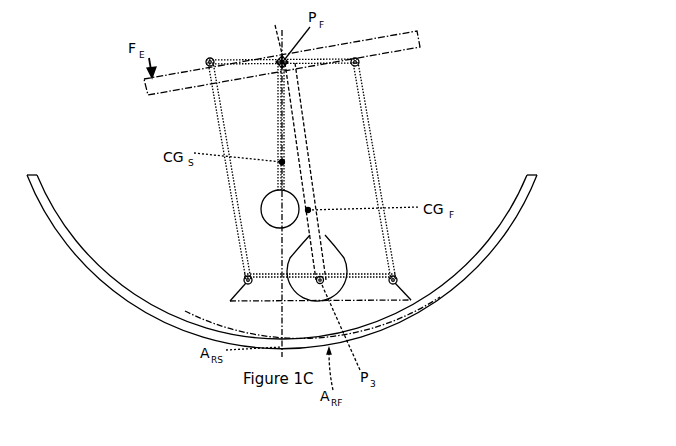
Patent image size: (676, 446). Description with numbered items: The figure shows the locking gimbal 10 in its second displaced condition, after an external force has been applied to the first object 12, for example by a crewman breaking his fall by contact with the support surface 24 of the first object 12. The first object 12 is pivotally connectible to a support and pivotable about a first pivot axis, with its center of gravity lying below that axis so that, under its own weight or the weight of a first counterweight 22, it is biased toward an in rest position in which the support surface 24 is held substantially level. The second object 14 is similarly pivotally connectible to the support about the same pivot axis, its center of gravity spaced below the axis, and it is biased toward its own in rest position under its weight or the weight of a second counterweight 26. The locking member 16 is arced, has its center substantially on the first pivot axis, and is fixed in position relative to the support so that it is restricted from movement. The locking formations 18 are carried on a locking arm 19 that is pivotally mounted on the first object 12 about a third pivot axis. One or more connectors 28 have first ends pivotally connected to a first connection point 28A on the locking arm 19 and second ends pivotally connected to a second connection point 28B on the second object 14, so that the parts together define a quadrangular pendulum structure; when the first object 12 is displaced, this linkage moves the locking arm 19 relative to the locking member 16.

The locking gimbal 10 is at (606, 71).
The first object 12 is at (328, 142).
The second object 14 is at (282, 180).
The locking member 16 is at (478, 258).
The locking formation 18 is at (230, 301).
The locking arm 19 is at (368, 290).
The first counterweight 22 is at (333, 262).
The support surface 24 is at (419, 40).
The second counterweight 26 is at (273, 214).
The connector 28 is at (220, 126).
The first connection point 28A is at (397, 283).
The second connection point 28B is at (208, 58).